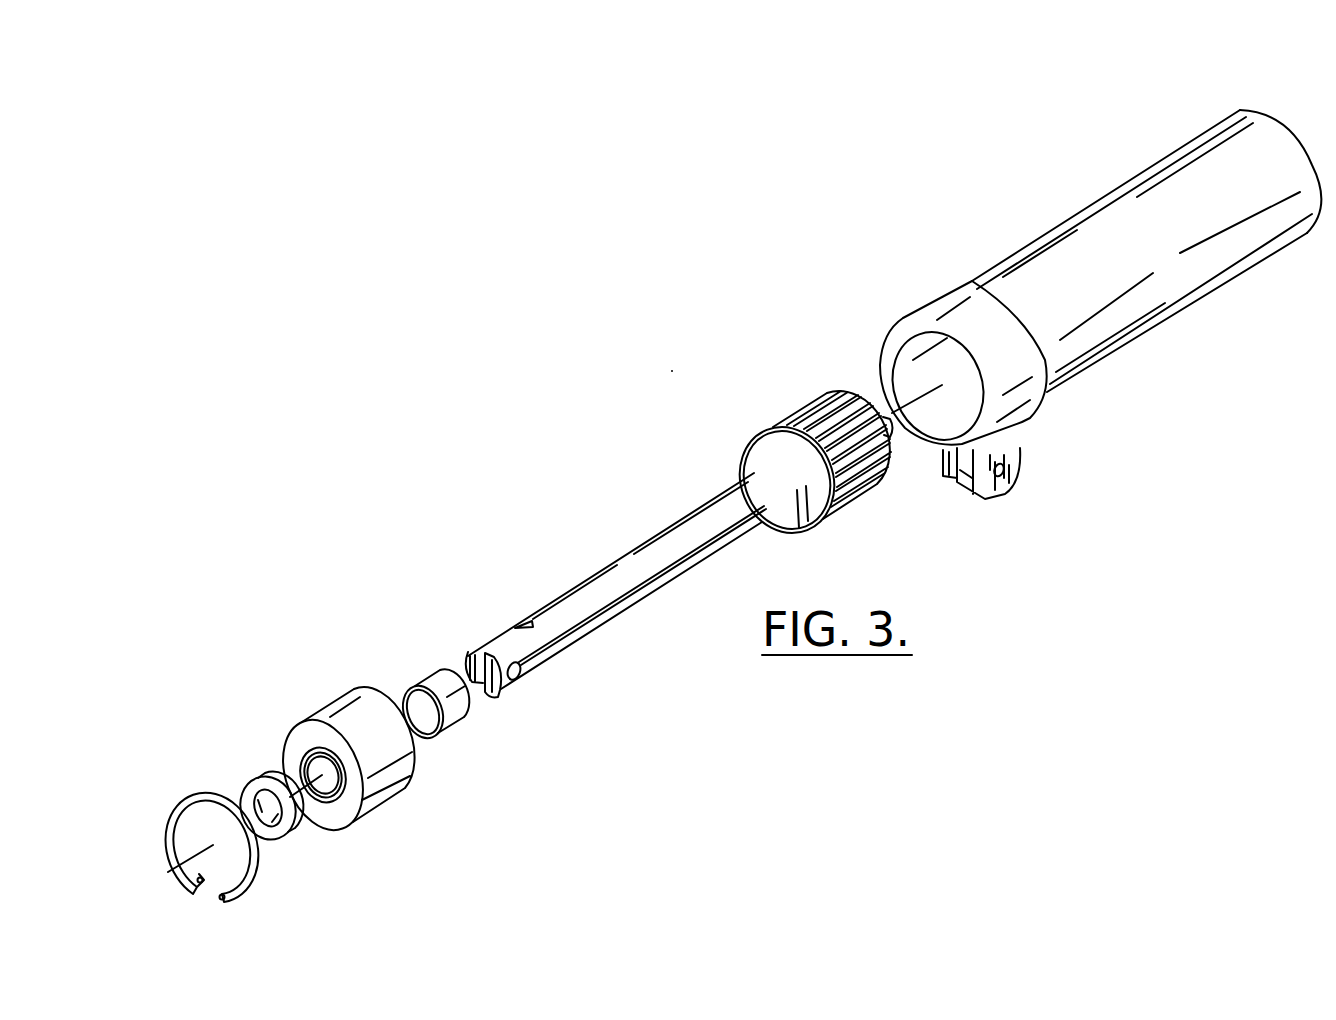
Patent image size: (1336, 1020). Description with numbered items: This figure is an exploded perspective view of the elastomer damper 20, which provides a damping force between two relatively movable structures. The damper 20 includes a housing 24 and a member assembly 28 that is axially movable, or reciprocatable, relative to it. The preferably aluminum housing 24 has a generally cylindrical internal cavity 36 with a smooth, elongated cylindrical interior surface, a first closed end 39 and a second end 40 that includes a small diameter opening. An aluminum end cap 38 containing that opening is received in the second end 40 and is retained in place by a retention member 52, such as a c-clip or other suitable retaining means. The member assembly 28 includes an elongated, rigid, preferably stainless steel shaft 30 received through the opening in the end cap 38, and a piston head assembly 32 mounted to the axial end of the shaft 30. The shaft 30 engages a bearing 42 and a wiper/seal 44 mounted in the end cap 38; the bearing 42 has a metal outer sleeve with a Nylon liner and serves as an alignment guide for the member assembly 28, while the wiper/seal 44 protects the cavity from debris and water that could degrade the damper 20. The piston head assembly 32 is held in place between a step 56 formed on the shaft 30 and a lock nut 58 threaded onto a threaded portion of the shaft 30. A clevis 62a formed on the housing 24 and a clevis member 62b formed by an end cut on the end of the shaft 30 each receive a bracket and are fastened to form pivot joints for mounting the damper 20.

The elastomer damper 20 is at (672, 371).
The housing 24 is at (1071, 208).
The member assembly 28 is at (645, 533).
The shaft 30 is at (624, 592).
The piston head assembly 32 is at (782, 414).
The internal cavity 36 is at (930, 368).
The end cap 38 is at (328, 696).
The first closed end 39 is at (1228, 104).
The second end 40 is at (896, 323).
The bearing 42 is at (428, 669).
The wiper/seal 44 is at (250, 773).
The retention member 52 is at (180, 784).
The step 56 is at (757, 439).
The lock nut 58 is at (893, 433).
The clevis 62a is at (997, 504).
The clevis member 62b is at (517, 686).